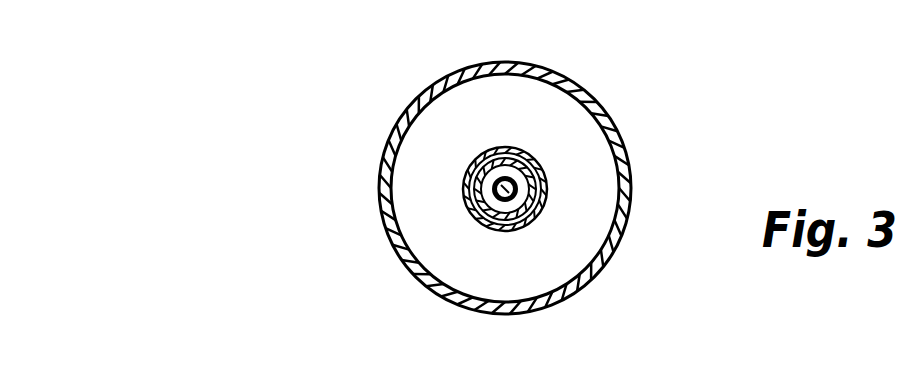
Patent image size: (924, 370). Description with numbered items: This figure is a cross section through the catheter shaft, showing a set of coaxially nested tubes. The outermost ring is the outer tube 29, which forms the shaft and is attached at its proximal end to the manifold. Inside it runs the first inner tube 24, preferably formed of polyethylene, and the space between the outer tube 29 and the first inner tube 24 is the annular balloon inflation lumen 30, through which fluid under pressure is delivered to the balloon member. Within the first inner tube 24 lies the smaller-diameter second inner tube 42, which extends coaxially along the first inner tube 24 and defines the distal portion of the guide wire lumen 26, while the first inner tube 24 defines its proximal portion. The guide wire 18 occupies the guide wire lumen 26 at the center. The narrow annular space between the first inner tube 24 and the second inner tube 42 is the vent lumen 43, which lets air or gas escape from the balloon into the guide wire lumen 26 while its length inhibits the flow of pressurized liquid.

The guide wire 18 is at (490, 187).
The first inner tube 24 is at (472, 209).
The guide wire lumen 26 is at (540, 203).
The outer tube 29 is at (413, 101).
The annular balloon inflation lumen 30 is at (578, 128).
The second inner tube 42 is at (522, 171).
The annular vent lumen 43 is at (505, 227).